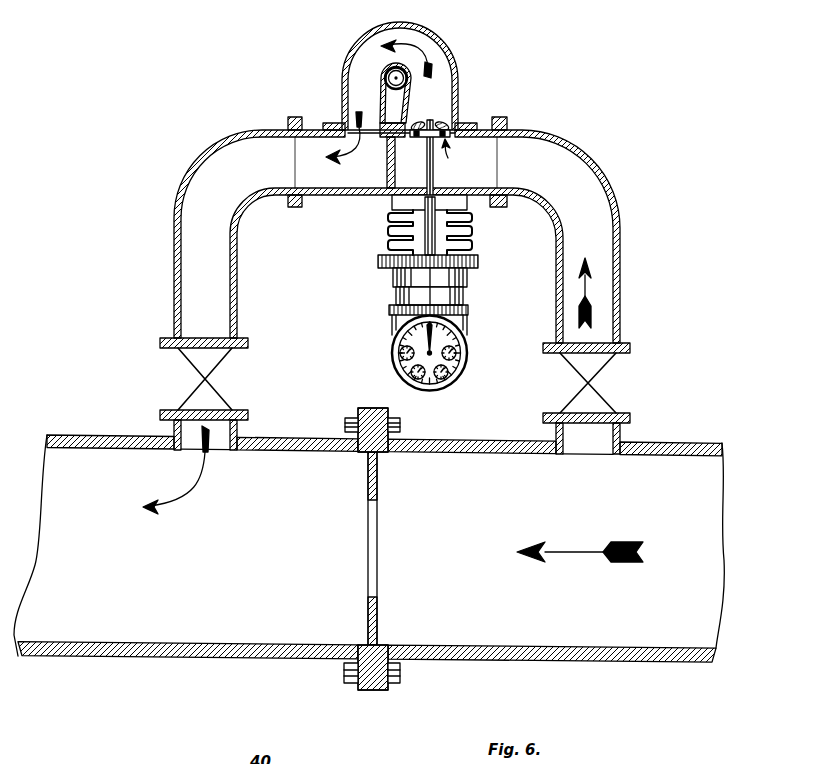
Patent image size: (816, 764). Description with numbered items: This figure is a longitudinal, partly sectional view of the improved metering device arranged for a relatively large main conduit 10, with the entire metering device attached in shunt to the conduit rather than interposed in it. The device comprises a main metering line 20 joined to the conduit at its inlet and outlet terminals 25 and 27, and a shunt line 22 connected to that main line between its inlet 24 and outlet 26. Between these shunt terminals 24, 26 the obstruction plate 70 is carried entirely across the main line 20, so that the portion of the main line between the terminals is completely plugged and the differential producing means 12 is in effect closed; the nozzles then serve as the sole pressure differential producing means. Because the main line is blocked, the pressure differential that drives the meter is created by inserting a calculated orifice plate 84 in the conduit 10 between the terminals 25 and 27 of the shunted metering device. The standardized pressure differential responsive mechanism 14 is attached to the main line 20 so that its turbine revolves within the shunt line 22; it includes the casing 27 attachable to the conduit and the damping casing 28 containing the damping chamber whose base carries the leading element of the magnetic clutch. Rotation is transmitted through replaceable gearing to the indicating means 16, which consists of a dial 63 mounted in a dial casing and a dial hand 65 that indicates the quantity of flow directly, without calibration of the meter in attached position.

The main conduit 10 is at (93, 458).
The differential producing means 12 is at (366, 563).
The pressure differential responsive mechanism 14 is at (478, 268).
The indicating means 16 is at (398, 352).
The main metering line 20 is at (337, 196).
The shunt line 22 is at (456, 78).
The inlet of the shunt line 24 is at (457, 146).
The inlet terminal of the main line of the metering device 25 is at (620, 443).
The outlet of the shunt line 26 is at (342, 128).
The casing 27 is at (172, 438).
The damping casing 28 is at (400, 277).
The dial 63 is at (462, 373).
The dial hand 65 is at (431, 340).
The obstruction plate 70 is at (384, 176).
The orifice plate 84 is at (378, 630).